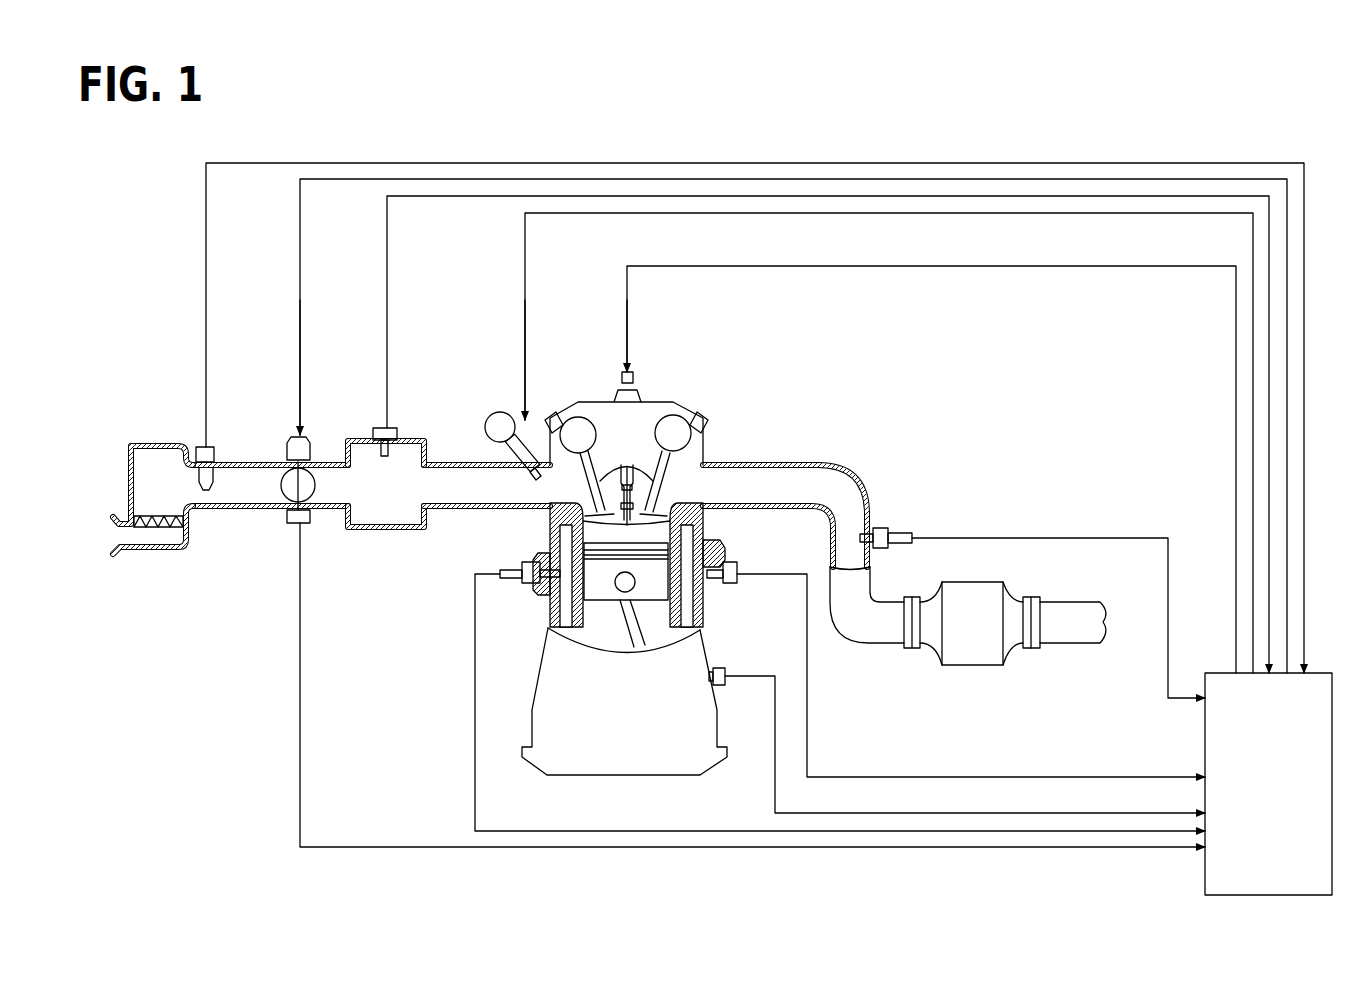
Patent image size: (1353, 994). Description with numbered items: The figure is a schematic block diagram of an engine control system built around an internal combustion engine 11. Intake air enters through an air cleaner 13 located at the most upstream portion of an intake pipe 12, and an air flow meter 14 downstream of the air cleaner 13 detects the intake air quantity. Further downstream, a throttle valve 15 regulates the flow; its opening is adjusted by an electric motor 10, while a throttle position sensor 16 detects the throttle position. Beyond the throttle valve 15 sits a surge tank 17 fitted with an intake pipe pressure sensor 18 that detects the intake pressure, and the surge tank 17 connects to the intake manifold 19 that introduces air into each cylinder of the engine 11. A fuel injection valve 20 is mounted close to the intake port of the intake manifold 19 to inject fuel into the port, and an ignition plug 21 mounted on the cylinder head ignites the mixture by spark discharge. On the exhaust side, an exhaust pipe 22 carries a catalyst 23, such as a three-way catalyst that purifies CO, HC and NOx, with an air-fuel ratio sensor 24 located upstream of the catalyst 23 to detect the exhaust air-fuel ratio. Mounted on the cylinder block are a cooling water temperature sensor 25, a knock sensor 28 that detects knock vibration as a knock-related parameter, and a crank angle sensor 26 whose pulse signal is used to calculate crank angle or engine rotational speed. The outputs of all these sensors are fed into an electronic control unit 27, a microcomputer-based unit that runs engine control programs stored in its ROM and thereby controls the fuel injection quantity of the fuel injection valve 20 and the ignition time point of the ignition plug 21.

The electric motor 10 is at (308, 440).
The internal combustion engine 11 is at (680, 402).
The intake pipe 12 is at (240, 460).
The air cleaner 13 is at (160, 530).
The air flow meter 14 is at (200, 445).
The throttle valve 15 is at (305, 490).
The throttle position sensor 16 is at (292, 525).
The surge tank 17 is at (348, 438).
The intake pipe pressure sensor 18 is at (395, 428).
The intake manifold 19 is at (452, 462).
The fuel injection valve 20 is at (490, 430).
The ignition plug 21 is at (634, 400).
The exhaust pipe 22 is at (815, 462).
The catalyst 23 is at (990, 585).
The air-fuel ratio sensor 24 is at (885, 528).
The cooling water temperature sensor 25 is at (520, 583).
The crank angle sensor 26 is at (725, 668).
The electronic control unit (ECU) 27 is at (1205, 870).
The knock sensor 28 is at (745, 570).